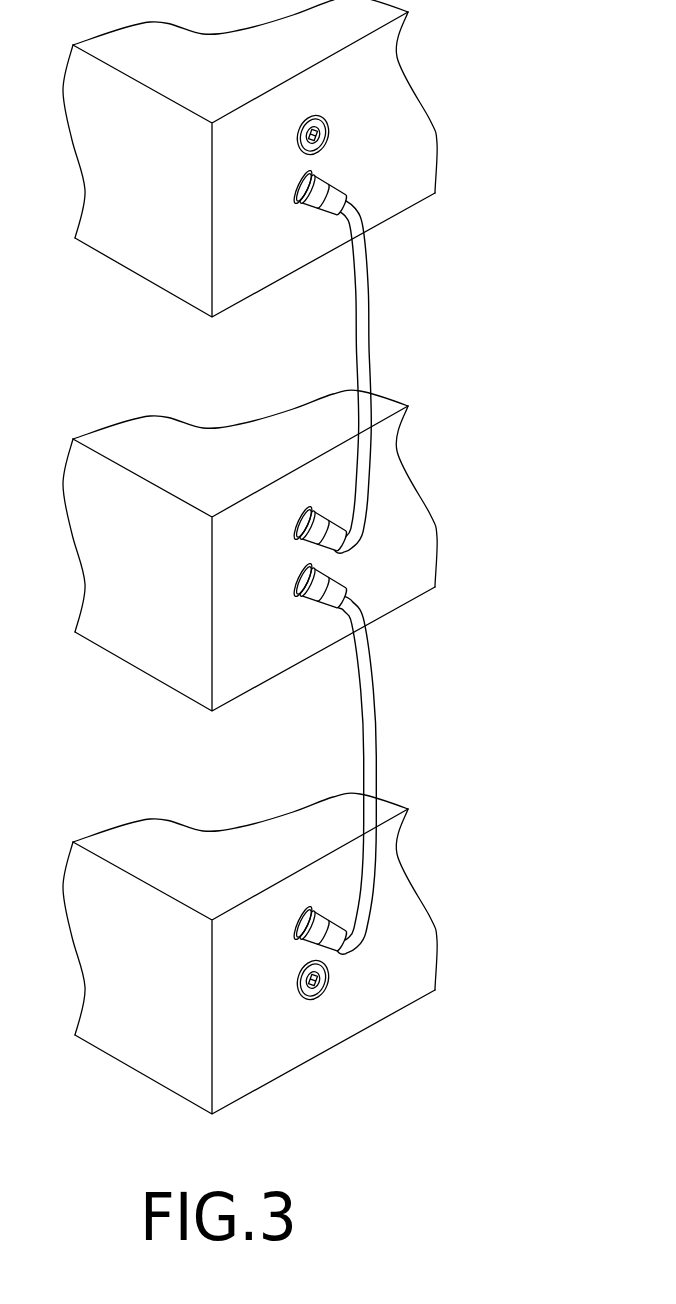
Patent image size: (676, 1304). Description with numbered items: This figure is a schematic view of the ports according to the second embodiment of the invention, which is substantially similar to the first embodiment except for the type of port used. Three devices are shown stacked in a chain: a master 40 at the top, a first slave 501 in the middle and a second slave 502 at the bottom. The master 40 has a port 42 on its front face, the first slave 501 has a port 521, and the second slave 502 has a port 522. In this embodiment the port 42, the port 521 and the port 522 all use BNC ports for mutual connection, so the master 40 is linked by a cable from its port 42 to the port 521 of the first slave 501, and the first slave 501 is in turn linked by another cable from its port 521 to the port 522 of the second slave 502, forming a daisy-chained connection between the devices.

The master 40 is at (438, 148).
The port 42 is at (290, 145).
The first slave 501 is at (438, 535).
The port 521 is at (281, 532).
The second slave 502 is at (437, 940).
The port 522 is at (281, 935).